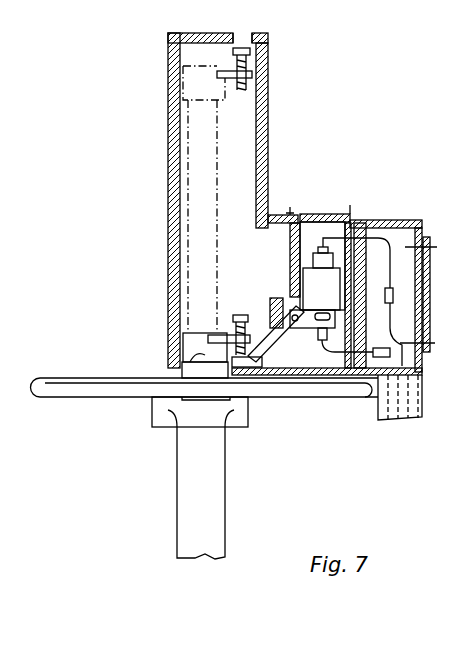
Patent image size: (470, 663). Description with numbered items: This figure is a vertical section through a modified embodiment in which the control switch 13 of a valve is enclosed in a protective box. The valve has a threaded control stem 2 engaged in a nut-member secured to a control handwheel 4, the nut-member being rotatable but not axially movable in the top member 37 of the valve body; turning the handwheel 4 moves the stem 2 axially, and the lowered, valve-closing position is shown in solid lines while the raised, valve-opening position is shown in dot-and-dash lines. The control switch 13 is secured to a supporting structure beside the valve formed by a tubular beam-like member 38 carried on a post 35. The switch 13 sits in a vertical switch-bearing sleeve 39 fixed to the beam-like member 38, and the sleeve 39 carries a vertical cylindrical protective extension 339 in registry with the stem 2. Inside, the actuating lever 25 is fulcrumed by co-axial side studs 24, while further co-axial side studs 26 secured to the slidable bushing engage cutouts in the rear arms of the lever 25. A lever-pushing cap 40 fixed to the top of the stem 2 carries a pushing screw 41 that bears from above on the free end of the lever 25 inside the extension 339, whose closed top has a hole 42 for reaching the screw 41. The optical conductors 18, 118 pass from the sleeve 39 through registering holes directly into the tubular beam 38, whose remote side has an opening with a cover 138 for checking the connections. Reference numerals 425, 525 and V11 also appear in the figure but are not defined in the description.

The stem 2 is at (192, 150).
The control handwheel 4 is at (64, 380).
The control switch 13 is at (310, 272).
The optical conductor 18 is at (368, 238).
The side studs 24 is at (275, 308).
The actuating lever 25 is at (283, 376).
The side studs 26 is at (301, 376).
The post 35 is at (423, 410).
The top member of the valve body 37 is at (170, 427).
The beam-like member 38 is at (420, 244).
The switch-bearing sleeve 39 is at (295, 224).
The lever-pushing cap 40 is at (192, 343).
The pushing screw 41 is at (232, 320).
The hole 42 is at (247, 36).
The optical conductor 118 is at (334, 376).
The cover 138 is at (430, 282).
The vertical cylindrical protective extension 339 is at (168, 100).
The foot plate 425 is at (260, 376).
The pin 525 is at (332, 214).
The shaft V11 is at (182, 517).